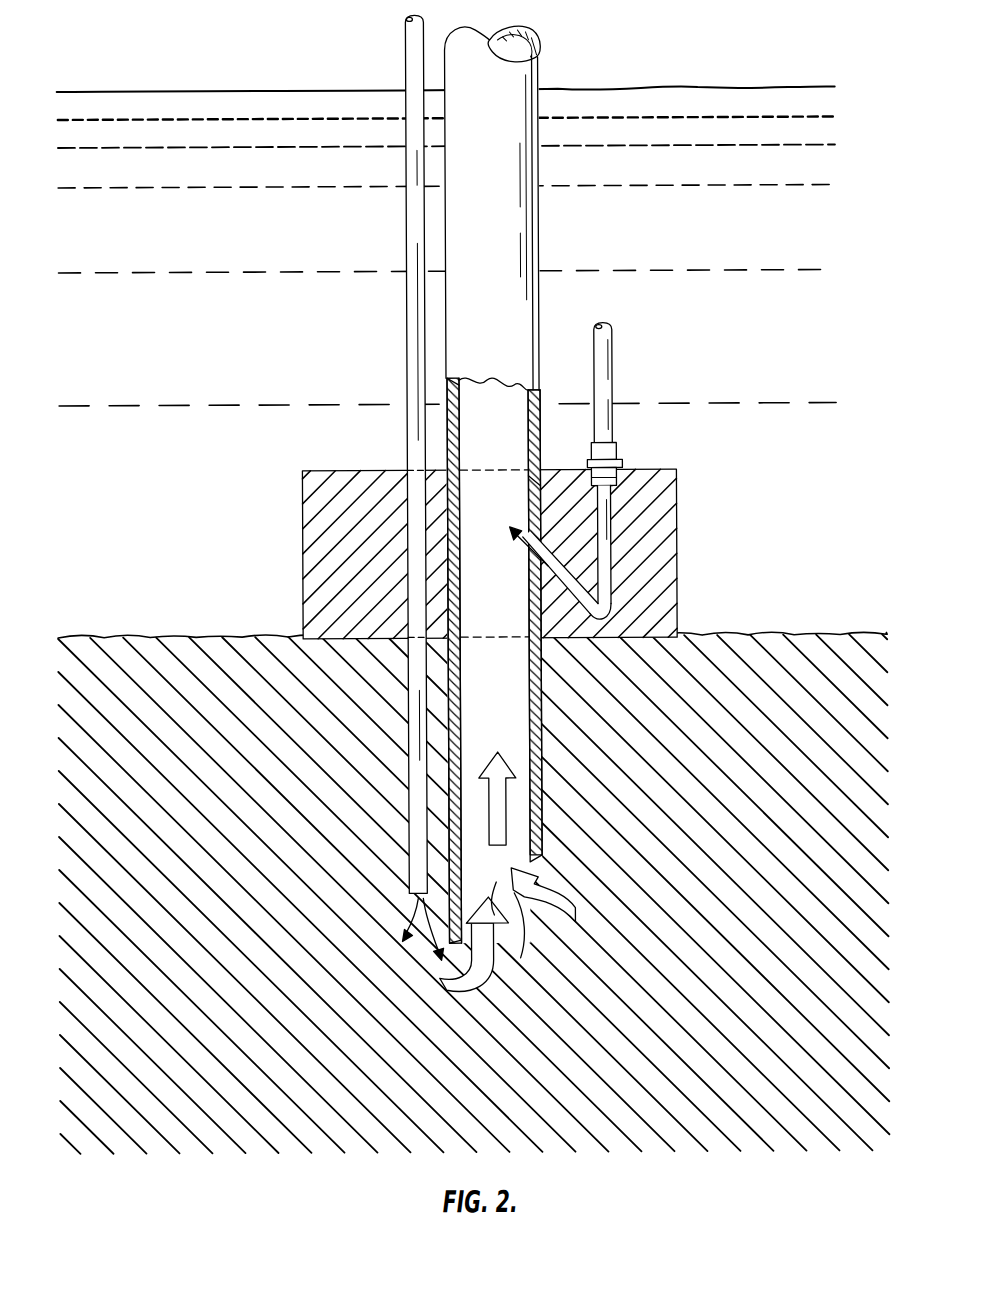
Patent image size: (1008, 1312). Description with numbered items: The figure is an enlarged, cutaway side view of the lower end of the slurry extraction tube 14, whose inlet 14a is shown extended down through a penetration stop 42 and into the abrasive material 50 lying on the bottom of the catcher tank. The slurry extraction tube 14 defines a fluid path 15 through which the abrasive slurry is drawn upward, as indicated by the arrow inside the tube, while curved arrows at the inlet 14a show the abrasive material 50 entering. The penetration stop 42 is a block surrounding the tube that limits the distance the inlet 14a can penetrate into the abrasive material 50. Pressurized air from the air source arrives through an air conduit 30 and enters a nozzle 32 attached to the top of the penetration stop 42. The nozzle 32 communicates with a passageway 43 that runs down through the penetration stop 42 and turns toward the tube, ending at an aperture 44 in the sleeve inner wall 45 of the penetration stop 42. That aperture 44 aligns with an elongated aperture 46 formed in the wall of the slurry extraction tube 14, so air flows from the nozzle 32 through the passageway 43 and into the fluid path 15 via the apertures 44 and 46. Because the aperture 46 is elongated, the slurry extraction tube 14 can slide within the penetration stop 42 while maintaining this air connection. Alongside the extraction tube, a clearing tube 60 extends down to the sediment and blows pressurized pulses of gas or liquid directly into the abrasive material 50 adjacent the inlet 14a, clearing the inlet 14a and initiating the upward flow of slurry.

The slurry extraction tube 14 is at (507, 200).
The inlet 14a is at (489, 930).
The fluid path 15 is at (458, 428).
The air conduit 30 is at (614, 358).
The nozzle 32 is at (613, 453).
The penetration stop 42 is at (327, 519).
The passageway 43 is at (612, 537).
The aperture 44 is at (602, 632).
The sleeve inner wall 45 is at (530, 482).
The elongated aperture 46 is at (640, 625).
The abrasive material 50 is at (200, 634).
The clearing tube 60 is at (407, 233).